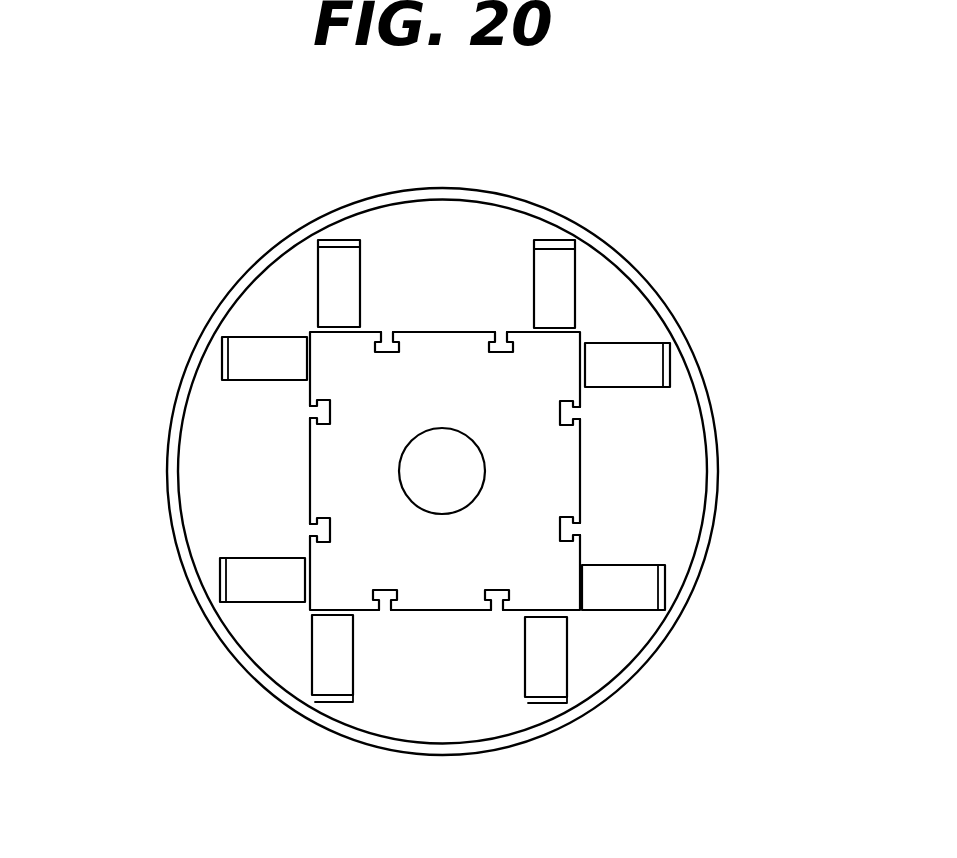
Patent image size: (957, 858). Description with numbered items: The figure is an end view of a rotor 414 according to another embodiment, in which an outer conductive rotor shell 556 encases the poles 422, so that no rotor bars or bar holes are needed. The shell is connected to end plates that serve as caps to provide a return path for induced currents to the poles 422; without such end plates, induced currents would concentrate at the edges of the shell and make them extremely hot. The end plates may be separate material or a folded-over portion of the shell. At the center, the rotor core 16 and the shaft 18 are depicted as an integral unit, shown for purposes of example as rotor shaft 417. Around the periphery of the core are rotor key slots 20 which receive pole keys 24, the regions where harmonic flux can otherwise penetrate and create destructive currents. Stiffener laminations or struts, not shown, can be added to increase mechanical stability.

The rotor 414 is at (206, 244).
The circular housing ring 556 is at (694, 372).
The rotor core 16 is at (456, 397).
The rotor shaft 417 is at (384, 490).
The shaft 18 is at (460, 487).
The rotor key slots 20 is at (509, 347).
The pole keys 24 is at (505, 353).
The poles 422 is at (471, 305).